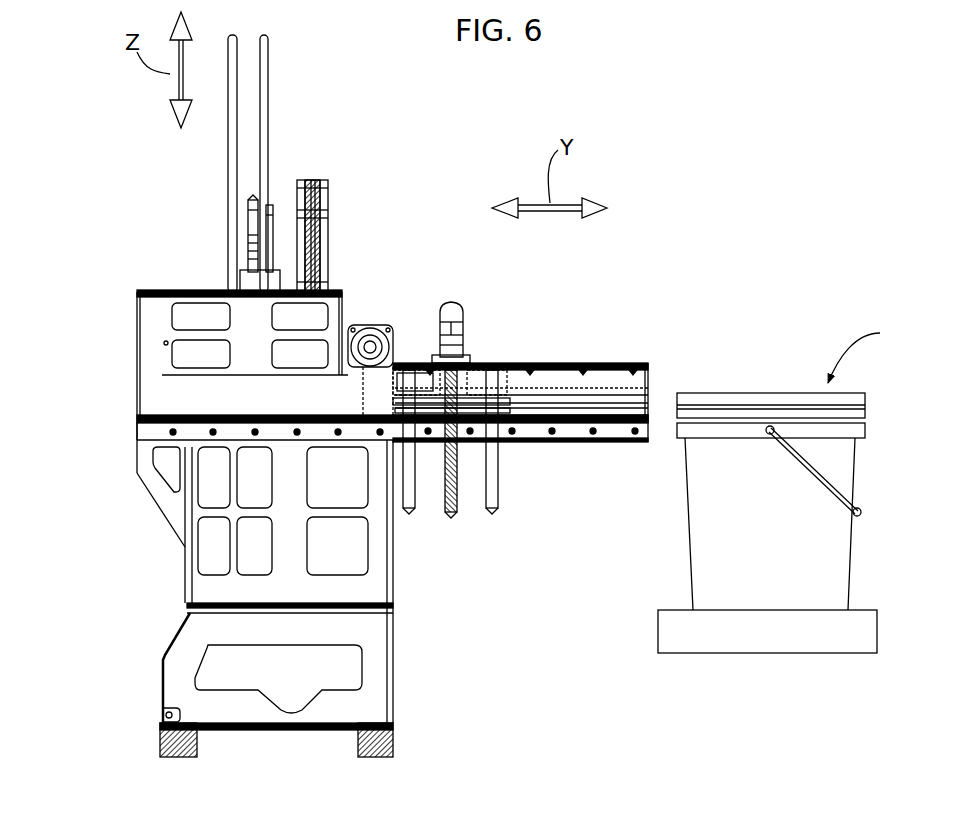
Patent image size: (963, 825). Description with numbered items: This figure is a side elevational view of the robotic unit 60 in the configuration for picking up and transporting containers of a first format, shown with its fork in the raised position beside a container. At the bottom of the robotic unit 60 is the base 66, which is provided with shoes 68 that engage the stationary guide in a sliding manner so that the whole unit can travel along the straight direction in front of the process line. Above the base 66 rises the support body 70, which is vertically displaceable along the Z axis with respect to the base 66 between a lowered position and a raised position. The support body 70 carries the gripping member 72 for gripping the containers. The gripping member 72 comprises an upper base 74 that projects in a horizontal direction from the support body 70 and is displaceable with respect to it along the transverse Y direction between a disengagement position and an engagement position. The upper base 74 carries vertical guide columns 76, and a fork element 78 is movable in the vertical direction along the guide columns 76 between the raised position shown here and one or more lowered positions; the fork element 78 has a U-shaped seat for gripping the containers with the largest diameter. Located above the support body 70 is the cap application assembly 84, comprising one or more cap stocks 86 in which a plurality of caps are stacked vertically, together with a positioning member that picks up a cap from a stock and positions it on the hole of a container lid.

The robotic unit 60 is at (100, 256).
The base 66 is at (165, 660).
The shoes 68 is at (180, 758).
The support body 70 is at (165, 535).
The gripping member 72 is at (548, 342).
The upper base 74 is at (598, 362).
The vertical guide columns 76 is at (494, 510).
The fork element 78 is at (578, 424).
The cap application assembly 84 is at (210, 240).
The cap stocks 86 is at (268, 128).